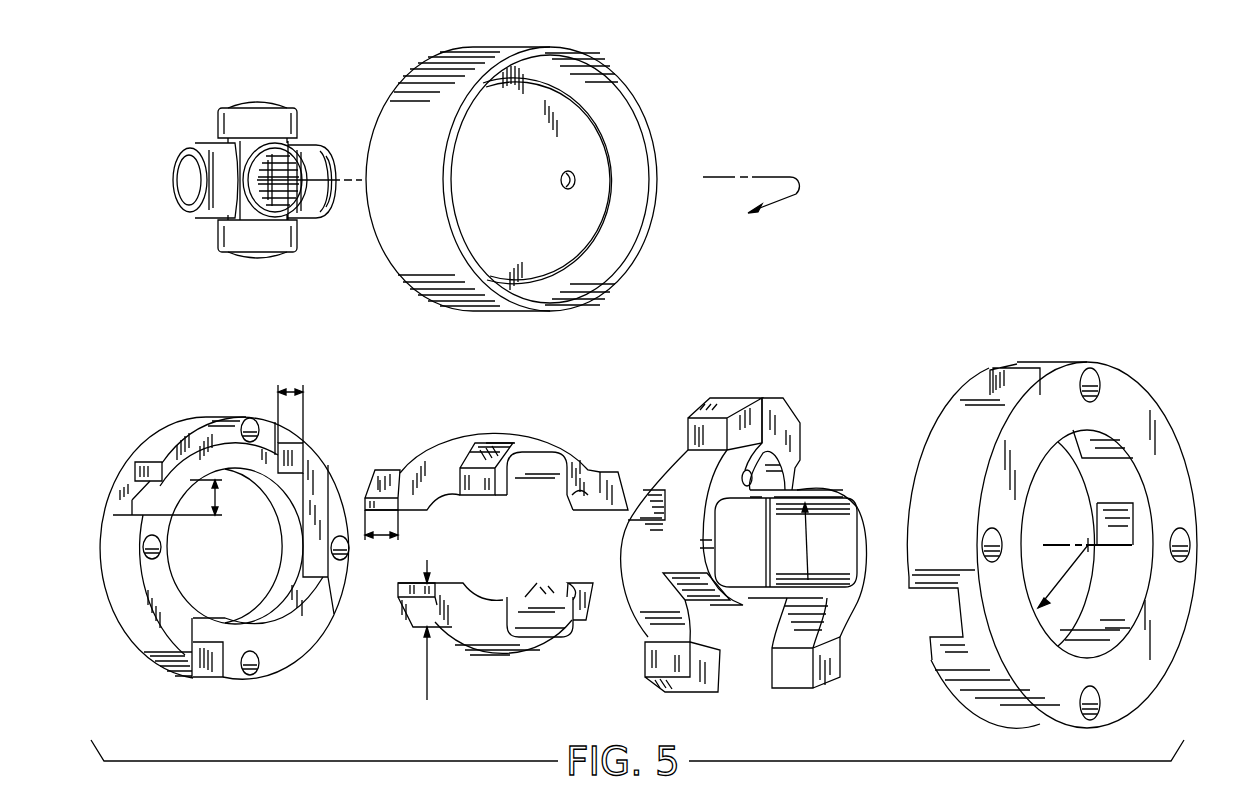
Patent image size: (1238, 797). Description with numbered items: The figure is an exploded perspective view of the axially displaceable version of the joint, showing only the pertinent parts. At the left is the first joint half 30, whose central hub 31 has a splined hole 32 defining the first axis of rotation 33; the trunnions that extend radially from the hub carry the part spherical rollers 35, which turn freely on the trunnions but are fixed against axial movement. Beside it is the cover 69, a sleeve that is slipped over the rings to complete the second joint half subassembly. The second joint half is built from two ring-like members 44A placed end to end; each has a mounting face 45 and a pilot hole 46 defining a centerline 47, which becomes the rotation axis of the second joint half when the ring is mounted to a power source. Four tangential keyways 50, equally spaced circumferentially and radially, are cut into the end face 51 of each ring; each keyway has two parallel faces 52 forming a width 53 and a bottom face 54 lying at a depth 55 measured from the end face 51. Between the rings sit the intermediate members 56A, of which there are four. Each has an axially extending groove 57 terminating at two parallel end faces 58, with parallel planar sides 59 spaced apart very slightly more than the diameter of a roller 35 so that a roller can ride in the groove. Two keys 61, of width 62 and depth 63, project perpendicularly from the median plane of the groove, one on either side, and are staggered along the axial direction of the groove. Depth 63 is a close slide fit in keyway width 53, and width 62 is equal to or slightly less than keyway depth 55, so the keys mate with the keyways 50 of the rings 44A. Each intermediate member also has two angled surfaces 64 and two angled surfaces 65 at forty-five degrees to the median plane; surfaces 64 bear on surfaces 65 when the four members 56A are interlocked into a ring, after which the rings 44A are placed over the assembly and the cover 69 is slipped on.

The first joint half 30 is at (237, 152).
The central hub 31 is at (259, 148).
The splined hole 32 is at (291, 150).
The first axis of rotation 33 is at (342, 175).
The part spherical roller 35 is at (200, 147).
The cover 69 is at (636, 100).
The ring-like member 44A is at (168, 437).
The mounting face 45 is at (1170, 462).
The pilot hole 46 is at (1118, 445).
The centerline 47 is at (1052, 545).
The tangential keyway 50 is at (190, 660).
The end face 51 is at (222, 428).
The parallel face 52 is at (135, 514).
The keyway width 53 is at (208, 497).
The bottom face 54 is at (275, 458).
The keyway depth 55 is at (288, 385).
The intermediate member 56A is at (452, 440).
The axially extending groove 57 is at (535, 473).
The end face of groove 58 is at (572, 478).
The planar side 59 is at (810, 580).
The key 61 is at (390, 470).
The key width 62 is at (382, 540).
The key depth 63 is at (430, 646).
The angled surface 64 is at (765, 467).
The angled surface 65 is at (488, 458).